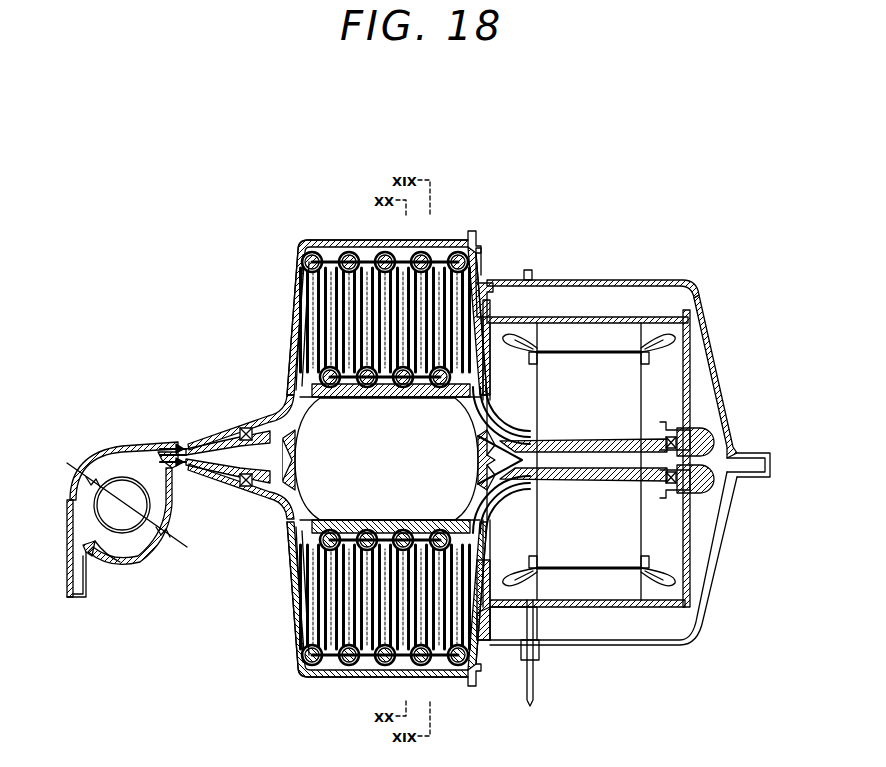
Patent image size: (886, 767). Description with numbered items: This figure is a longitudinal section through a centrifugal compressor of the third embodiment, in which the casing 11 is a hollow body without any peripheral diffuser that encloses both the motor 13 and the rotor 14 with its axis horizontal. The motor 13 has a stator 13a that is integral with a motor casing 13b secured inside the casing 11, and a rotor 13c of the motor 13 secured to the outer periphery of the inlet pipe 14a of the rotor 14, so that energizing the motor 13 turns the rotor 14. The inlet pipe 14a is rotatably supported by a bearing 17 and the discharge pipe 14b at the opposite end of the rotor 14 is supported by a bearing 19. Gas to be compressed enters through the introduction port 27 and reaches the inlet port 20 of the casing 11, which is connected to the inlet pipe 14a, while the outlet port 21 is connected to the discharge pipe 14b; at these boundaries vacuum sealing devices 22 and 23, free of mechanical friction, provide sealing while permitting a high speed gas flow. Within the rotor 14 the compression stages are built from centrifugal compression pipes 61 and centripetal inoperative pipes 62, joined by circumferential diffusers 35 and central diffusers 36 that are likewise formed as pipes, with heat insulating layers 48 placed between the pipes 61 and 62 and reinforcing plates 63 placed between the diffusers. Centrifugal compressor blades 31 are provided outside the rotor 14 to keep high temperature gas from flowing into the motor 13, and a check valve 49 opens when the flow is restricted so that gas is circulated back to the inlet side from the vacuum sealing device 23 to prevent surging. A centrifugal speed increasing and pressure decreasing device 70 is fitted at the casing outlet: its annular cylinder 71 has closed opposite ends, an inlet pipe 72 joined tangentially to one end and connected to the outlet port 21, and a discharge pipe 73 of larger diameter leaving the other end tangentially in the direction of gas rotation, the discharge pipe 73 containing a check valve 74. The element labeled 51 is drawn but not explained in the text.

The casing 11 is at (309, 240).
The rotor 14 is at (330, 258).
The circumferential diffusers 35 is at (385, 255).
The reinforcing plates 63 is at (368, 270).
The centripetal inoperative pipes 62 is at (440, 285).
The centrifugal compression pipes 61 is at (492, 262).
The check valve 49 is at (495, 300).
The heat insulating layers 48 is at (308, 318).
The partition plate 51 is at (333, 398).
The central diffusers 36 is at (385, 398).
The centrifugal compressor blades 31 is at (486, 416).
The motor 13 is at (699, 299).
The stator 13a is at (596, 340).
The motor casing 13b is at (706, 348).
The rotor of the motor 13c is at (622, 554).
The inlet pipe 14a is at (611, 440).
The bearing 17 is at (664, 422).
The vacuum sealing device 22 is at (664, 488).
The inlet port 20 is at (716, 481).
The introduction port 27 is at (772, 453).
The centrifugal speed increasing and pressure decreasing device 70 is at (158, 546).
The annular cylinder 71 is at (95, 464).
The inlet pipe 72 is at (131, 451).
The discharge pipe 73 is at (87, 588).
The check valve 74 is at (90, 566).
The outlet port 21 is at (178, 442).
The discharge pipe 14b is at (232, 434).
The bearing 19 is at (246, 428).
The vacuum sealing device 23 is at (228, 474).